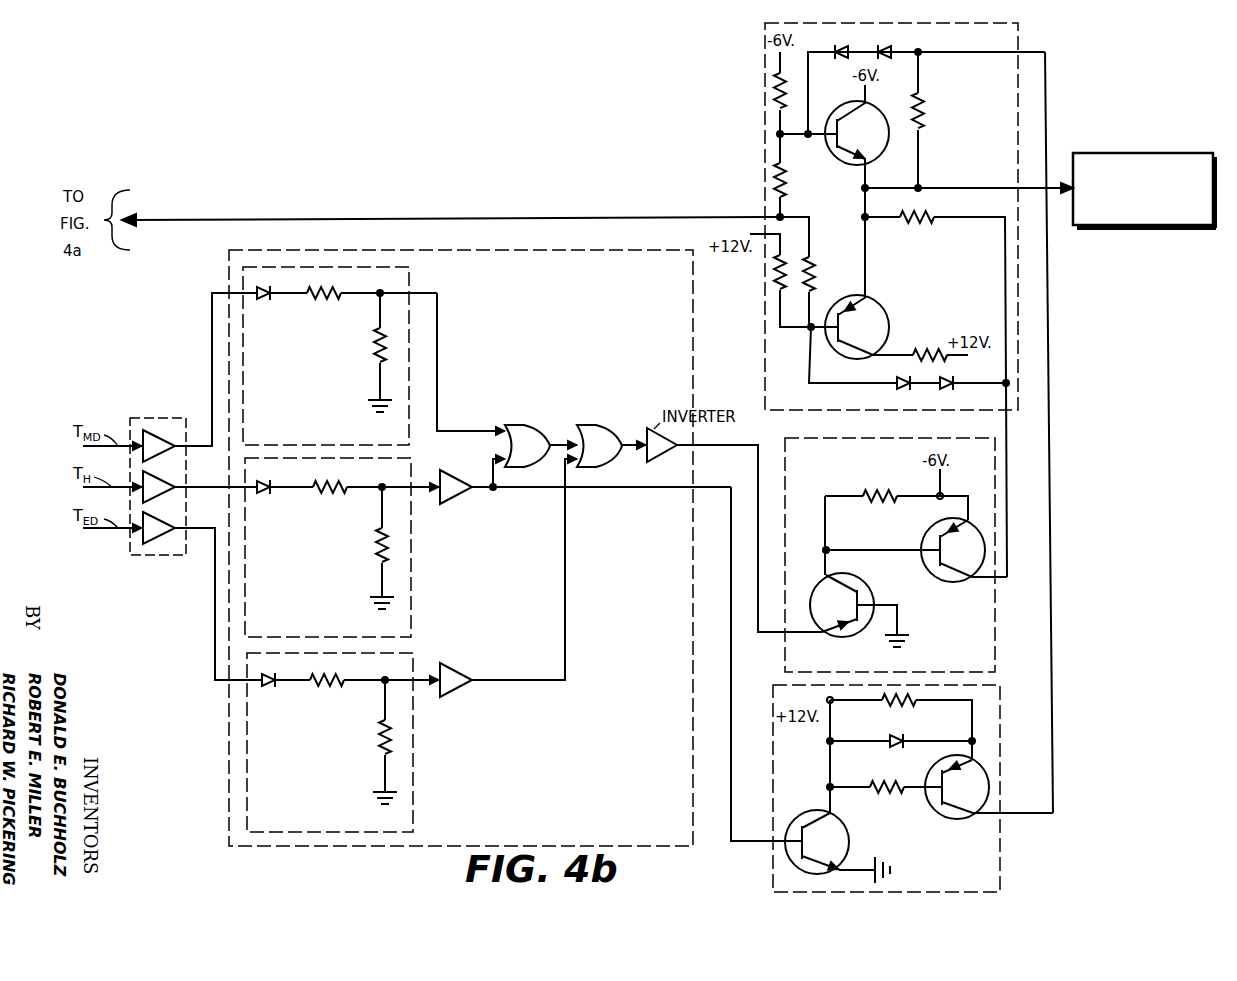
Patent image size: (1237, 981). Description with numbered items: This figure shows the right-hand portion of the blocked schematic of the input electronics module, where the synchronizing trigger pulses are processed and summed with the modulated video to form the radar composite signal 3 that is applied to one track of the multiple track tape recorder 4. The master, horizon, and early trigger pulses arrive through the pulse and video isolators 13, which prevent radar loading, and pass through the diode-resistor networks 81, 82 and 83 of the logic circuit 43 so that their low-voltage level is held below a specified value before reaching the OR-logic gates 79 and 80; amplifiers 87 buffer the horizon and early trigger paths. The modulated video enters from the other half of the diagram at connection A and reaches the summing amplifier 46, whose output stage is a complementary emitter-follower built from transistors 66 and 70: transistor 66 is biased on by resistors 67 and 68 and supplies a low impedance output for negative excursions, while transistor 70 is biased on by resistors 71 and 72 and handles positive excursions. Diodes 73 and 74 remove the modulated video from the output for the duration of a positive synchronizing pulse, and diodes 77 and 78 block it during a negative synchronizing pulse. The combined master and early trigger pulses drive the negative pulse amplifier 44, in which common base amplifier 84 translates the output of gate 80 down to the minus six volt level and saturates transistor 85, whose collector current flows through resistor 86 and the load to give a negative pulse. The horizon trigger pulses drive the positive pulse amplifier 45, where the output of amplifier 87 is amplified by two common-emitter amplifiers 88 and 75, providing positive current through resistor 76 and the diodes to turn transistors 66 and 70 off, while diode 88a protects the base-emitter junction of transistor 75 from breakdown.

The radar composite signal 3 is at (960, 190).
The multiple track tape recorder 4 is at (1204, 153).
The pulse and video isolators 13 is at (150, 419).
The logic circuit 43 is at (560, 251).
The negative pulse amplifier 44 is at (997, 640).
The positive pulse amplifier 45 is at (1000, 721).
The summing amplifier 46 is at (765, 51).
The transistor 66 is at (868, 114).
The resistor 67 is at (780, 100).
The resistor 68 is at (787, 192).
The transistor 70 is at (882, 320).
The resistor 71 is at (778, 284).
The resistor 72 is at (815, 270).
The diode 73 is at (885, 53).
The diode 74 is at (845, 58).
The transistor 75 is at (968, 820).
The resistor 76 is at (926, 102).
The diode 77 is at (897, 386).
The diode 78 is at (953, 376).
The OR-logic gate 79 is at (512, 426).
The OR-logic gate 80 is at (586, 426).
The diode-resistor network 81 is at (410, 292).
The diode-resistor network 82 is at (412, 558).
The diode-resistor network 83 is at (414, 772).
The common base amplifier transistor 84 is at (864, 581).
The transistor 85 is at (925, 532).
The resistor 86 is at (926, 224).
The amplifier 87 is at (442, 476).
The common-emitter amplifier transistor 88 is at (836, 823).
The diode 88a is at (896, 735).
The connection to FIG. 4a A is at (451, 212).